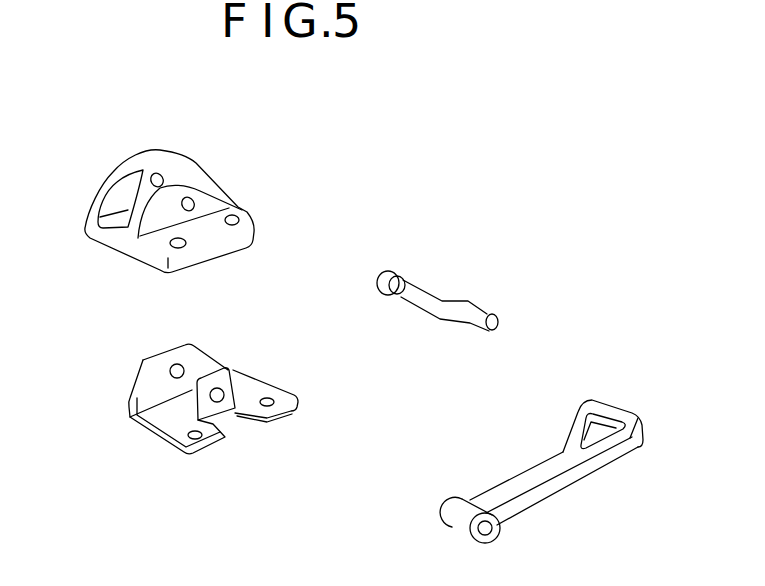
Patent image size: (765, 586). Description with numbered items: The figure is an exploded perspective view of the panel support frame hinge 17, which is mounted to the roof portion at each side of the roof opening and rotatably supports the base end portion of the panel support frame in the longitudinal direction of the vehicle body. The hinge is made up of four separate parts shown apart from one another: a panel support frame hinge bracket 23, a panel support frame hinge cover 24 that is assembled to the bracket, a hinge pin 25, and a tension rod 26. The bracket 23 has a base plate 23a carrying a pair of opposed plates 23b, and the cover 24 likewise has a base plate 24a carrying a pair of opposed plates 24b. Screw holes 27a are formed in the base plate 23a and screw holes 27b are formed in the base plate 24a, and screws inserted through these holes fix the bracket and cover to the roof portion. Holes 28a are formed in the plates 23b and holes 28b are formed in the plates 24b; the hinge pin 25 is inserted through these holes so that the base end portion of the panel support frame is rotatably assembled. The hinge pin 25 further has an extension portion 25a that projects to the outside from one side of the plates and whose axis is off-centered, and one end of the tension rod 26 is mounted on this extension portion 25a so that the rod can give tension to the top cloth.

The panel support frame hinge 17 is at (101, 356).
The panel support frame hinge bracket 23 is at (190, 458).
The base plate 23a is at (157, 425).
The opposed plates 23b is at (198, 355).
The panel support frame hinge cover 24 is at (98, 192).
The base plate 24a is at (145, 242).
The opposed plates 24b is at (163, 152).
The hinge pin 25 is at (425, 290).
The extension portion 25a is at (488, 308).
The tension rod 26 is at (632, 450).
The screw holes 27a is at (198, 435).
The screw holes 27b is at (236, 219).
The holes 28a is at (177, 365).
The holes 28b is at (156, 181).